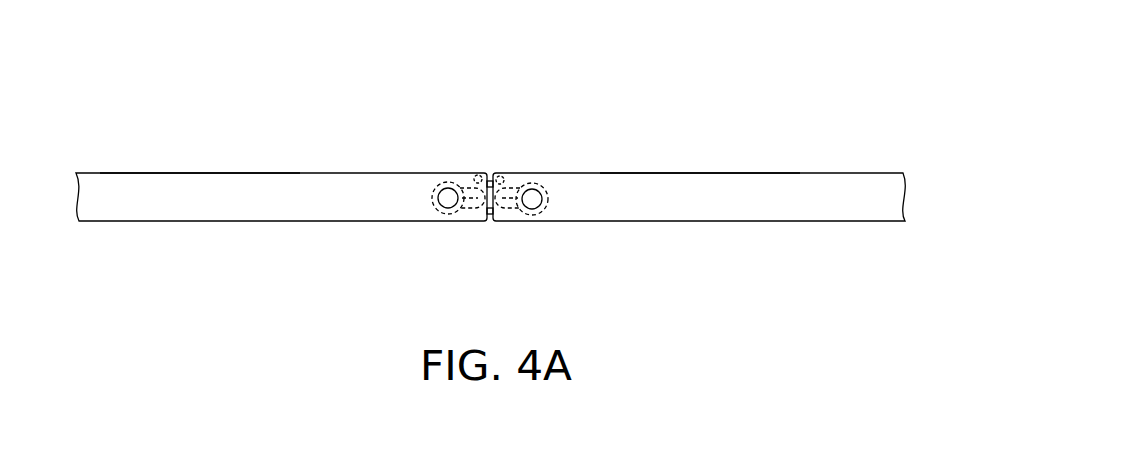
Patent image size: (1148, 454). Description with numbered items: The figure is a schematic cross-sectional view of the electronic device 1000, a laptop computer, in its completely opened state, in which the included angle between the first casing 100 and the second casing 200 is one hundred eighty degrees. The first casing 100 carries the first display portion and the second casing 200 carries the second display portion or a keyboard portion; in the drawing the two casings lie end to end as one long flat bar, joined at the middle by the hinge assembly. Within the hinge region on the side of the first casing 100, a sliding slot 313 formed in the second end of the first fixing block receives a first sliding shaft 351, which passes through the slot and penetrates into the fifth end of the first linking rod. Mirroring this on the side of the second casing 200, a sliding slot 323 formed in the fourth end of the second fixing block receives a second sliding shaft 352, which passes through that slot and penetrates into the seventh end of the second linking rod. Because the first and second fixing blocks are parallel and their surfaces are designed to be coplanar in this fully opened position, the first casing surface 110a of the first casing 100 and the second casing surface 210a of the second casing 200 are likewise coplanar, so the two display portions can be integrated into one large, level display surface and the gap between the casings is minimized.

The electronic device 1000 is at (784, 100).
The first casing 100 is at (802, 185).
The first casing surface 110a is at (673, 172).
The second casing 200 is at (198, 208).
The second casing surface 210a is at (152, 172).
The sliding slot 313 is at (517, 184).
The sliding slot 323 is at (467, 209).
The first sliding shaft 351 is at (535, 191).
The second sliding shaft 352 is at (446, 203).